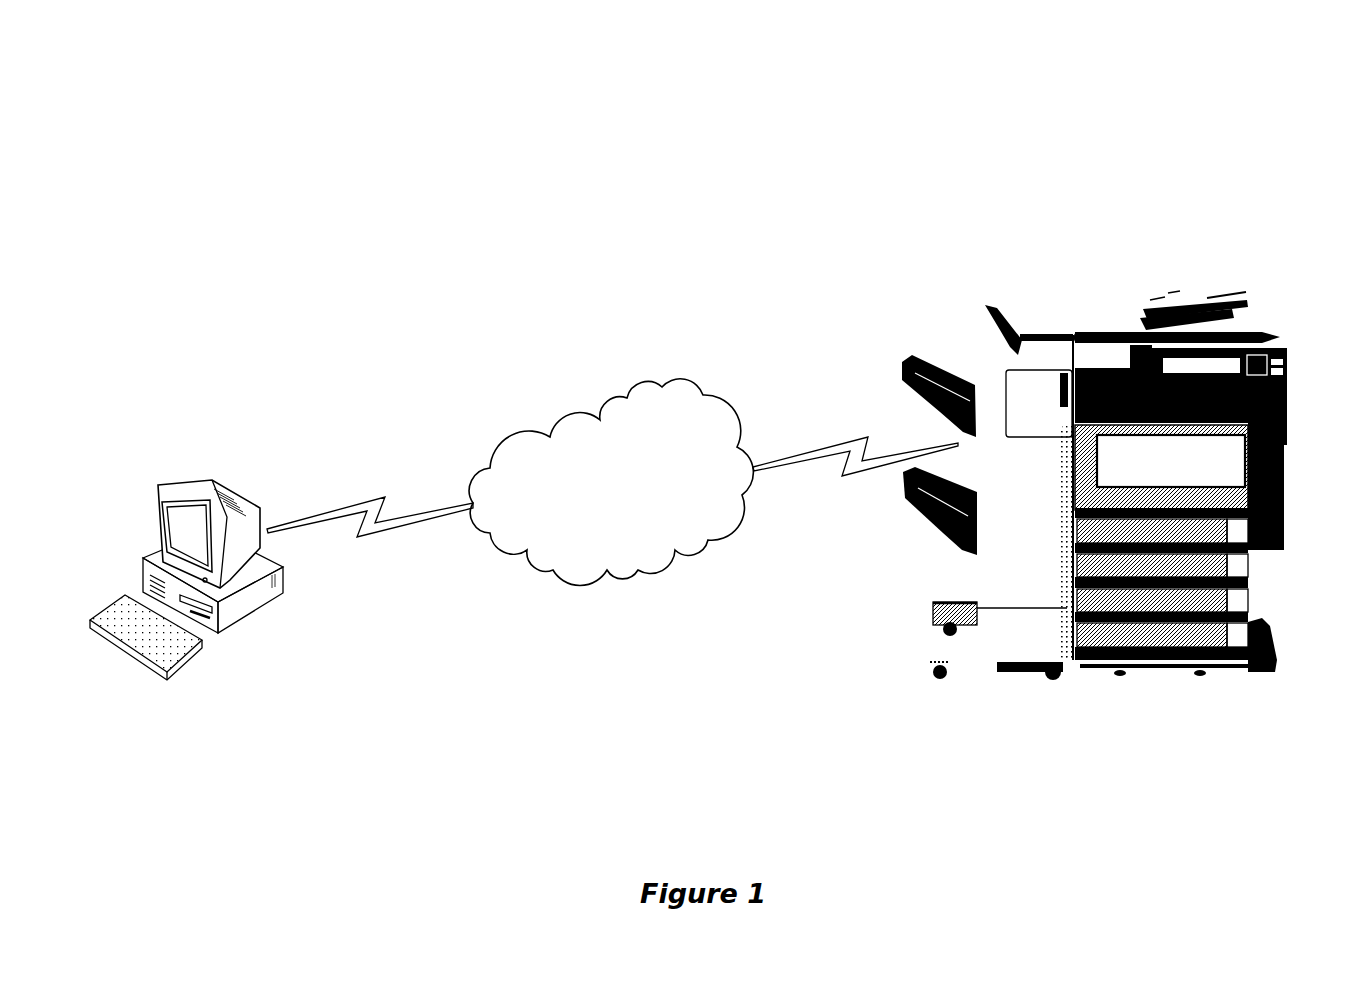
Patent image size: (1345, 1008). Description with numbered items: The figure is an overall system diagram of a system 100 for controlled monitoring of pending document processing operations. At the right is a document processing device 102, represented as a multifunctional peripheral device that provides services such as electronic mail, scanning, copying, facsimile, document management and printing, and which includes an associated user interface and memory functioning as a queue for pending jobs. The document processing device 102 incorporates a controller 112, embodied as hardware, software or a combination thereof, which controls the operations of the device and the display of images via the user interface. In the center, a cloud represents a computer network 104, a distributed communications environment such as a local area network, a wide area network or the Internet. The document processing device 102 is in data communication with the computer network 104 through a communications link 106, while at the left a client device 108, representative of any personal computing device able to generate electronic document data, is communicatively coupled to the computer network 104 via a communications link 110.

The system 100 is at (429, 110).
The document processing device 102 is at (1132, 283).
The computer network 104 is at (670, 372).
The communications link 106 is at (850, 440).
The client device 108 is at (168, 481).
The communications link 110 is at (370, 497).
The controller 112 is at (1288, 443).